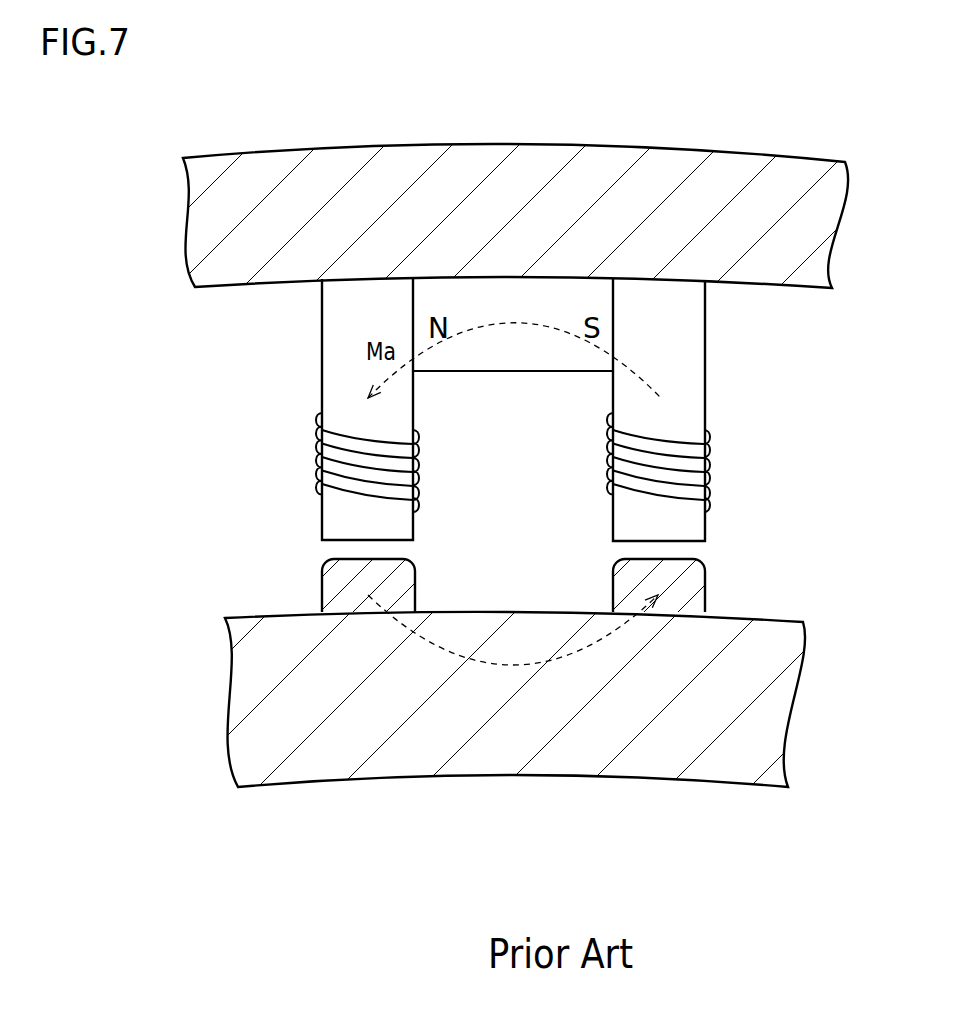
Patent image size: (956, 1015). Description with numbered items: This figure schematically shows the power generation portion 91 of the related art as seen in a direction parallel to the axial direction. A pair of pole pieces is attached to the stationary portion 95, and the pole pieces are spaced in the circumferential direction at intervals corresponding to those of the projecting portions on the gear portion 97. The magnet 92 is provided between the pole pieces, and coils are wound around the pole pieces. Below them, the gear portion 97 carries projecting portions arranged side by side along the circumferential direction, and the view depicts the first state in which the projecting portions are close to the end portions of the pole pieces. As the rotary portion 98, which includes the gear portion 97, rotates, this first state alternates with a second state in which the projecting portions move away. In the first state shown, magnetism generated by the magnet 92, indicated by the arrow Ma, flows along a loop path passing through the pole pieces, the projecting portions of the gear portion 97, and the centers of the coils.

The power generation portion 91 is at (733, 318).
The magnet 92 is at (515, 353).
The stationary portion 95 is at (512, 195).
The gear portion 97 is at (712, 551).
The rotary portion 98 is at (506, 750).